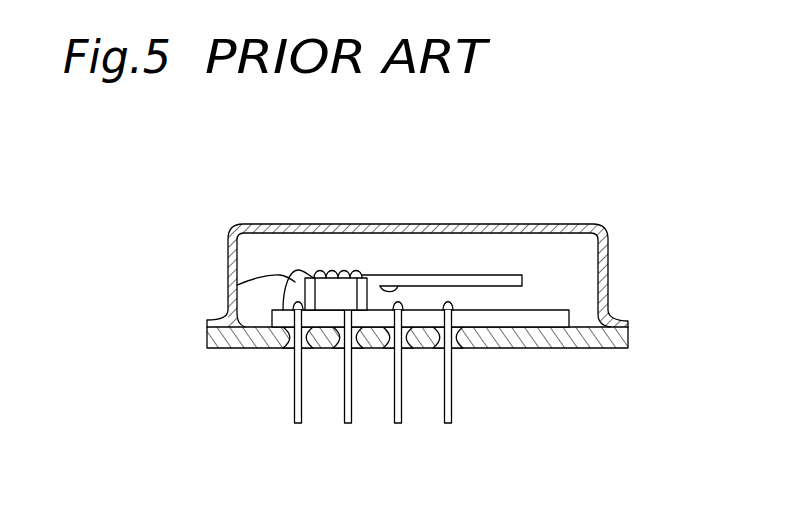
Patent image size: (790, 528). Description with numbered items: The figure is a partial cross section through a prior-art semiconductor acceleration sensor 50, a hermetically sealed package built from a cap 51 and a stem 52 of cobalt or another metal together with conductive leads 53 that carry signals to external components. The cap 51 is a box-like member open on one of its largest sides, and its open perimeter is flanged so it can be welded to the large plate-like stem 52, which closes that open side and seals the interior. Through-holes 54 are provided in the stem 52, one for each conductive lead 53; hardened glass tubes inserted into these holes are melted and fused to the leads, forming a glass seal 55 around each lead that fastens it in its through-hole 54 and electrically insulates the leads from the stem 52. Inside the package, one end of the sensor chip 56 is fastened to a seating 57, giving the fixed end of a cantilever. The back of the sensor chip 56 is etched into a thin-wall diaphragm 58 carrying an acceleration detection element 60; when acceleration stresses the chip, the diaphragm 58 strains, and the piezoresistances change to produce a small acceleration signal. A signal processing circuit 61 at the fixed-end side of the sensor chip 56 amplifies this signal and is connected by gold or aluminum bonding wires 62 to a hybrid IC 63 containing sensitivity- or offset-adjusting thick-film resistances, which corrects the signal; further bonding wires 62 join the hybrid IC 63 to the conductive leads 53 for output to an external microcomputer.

The semiconductor acceleration sensor 50 is at (497, 219).
The cap 51 is at (610, 239).
The stem 52 is at (580, 343).
The conductive leads 53 is at (452, 410).
The through-holes 54 is at (457, 351).
The glass seal 55 is at (292, 350).
The sensor chip 56 is at (512, 282).
The seating 57 is at (338, 277).
The thin-wall diaphragm 58 is at (402, 275).
The acceleration detection element 60 is at (367, 278).
The signal processing circuit 61 is at (316, 272).
The bonding wires 62 is at (228, 285).
The hybrid IC 63 is at (556, 321).